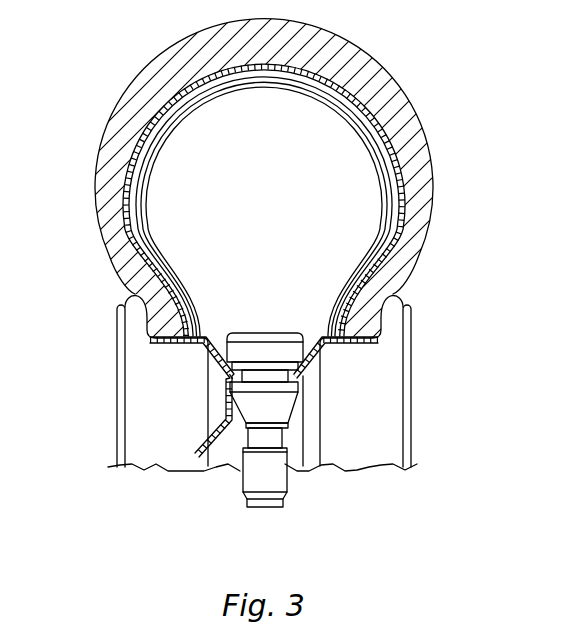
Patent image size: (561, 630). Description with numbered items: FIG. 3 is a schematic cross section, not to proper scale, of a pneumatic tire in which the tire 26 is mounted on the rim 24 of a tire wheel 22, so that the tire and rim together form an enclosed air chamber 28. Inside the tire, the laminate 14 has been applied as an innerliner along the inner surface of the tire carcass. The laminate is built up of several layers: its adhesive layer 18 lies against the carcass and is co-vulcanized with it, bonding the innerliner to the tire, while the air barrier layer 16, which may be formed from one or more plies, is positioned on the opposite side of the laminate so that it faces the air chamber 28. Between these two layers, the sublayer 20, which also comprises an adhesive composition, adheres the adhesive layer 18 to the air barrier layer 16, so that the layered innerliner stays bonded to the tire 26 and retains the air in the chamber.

The laminate 14 is at (196, 119).
The air barrier layer 16 is at (157, 145).
The adhesive layer 18 is at (181, 90).
The sublayer 20 is at (213, 88).
The tire wheel 22 is at (414, 395).
The rim 24 is at (390, 308).
The tire 26 is at (433, 188).
The air chamber 28 is at (175, 205).